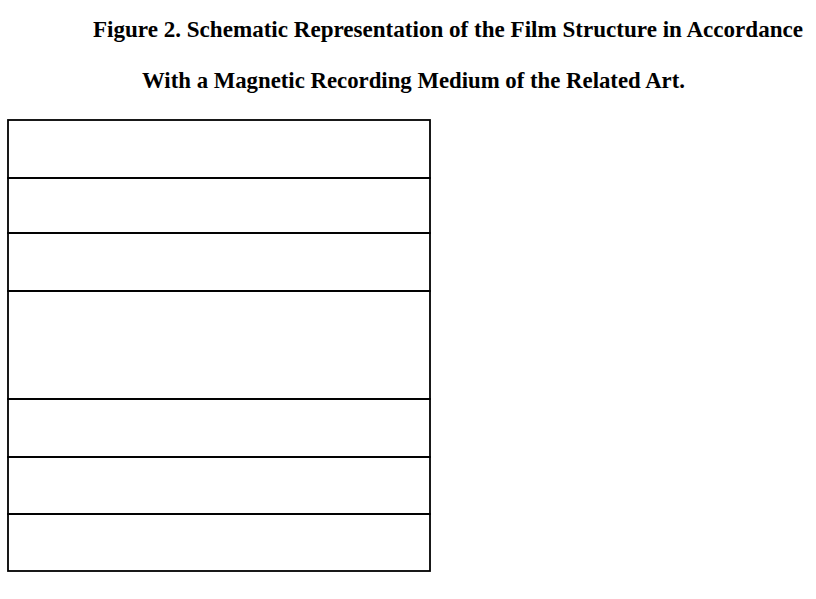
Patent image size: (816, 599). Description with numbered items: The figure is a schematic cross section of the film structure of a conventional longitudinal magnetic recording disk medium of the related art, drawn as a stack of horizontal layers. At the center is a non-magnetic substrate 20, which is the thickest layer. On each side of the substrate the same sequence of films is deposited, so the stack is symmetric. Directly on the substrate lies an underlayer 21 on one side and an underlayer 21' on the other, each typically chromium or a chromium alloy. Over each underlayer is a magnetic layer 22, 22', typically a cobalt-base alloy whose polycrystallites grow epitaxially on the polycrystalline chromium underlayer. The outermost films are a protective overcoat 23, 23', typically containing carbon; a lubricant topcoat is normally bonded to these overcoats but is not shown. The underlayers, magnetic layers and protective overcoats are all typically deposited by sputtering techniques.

The protective overcoat 23 is at (375, 149).
The magnetic layer 22 is at (355, 205).
The underlayer 21 is at (337, 262).
The non-magnetic substrate 20 is at (517, 366).
The underlayer 21' is at (341, 428).
The magnetic layer 22' is at (359, 485).
The protective overcoat 23' is at (379, 542).